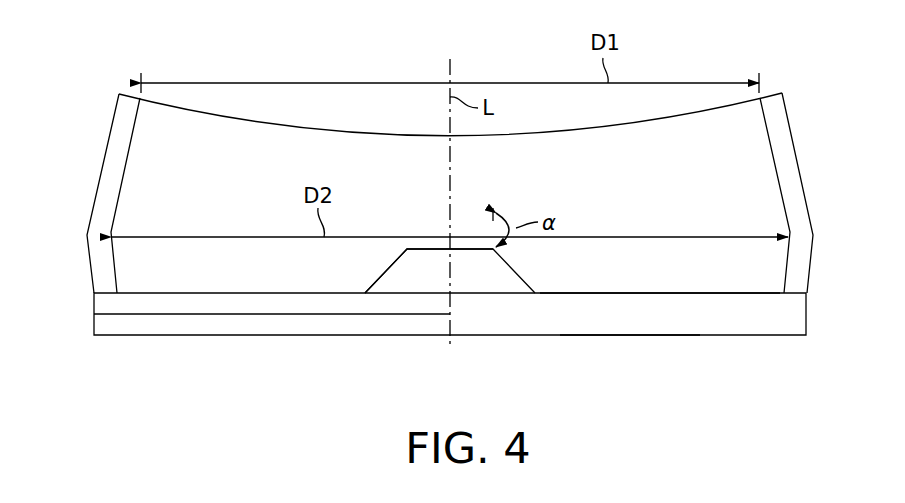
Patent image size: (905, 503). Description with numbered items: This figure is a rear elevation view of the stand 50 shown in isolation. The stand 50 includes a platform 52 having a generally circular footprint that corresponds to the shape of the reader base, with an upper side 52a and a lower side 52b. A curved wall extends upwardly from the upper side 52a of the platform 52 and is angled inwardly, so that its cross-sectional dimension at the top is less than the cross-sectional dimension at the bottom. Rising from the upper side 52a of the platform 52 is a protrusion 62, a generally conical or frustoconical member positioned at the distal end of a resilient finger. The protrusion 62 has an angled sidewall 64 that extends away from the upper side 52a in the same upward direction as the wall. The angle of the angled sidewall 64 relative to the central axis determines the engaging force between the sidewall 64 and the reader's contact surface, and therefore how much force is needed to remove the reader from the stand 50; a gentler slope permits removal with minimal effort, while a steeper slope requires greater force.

The stand 50 is at (787, 309).
The platform 52 is at (105, 303).
The upper side 52a is at (711, 292).
The lower side 52b is at (621, 336).
The protrusion 62 is at (475, 275).
The angled sidewall 64 is at (397, 275).